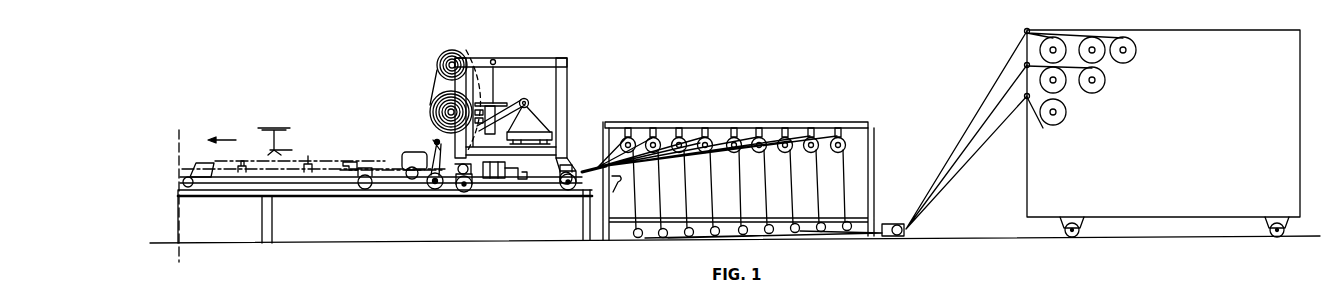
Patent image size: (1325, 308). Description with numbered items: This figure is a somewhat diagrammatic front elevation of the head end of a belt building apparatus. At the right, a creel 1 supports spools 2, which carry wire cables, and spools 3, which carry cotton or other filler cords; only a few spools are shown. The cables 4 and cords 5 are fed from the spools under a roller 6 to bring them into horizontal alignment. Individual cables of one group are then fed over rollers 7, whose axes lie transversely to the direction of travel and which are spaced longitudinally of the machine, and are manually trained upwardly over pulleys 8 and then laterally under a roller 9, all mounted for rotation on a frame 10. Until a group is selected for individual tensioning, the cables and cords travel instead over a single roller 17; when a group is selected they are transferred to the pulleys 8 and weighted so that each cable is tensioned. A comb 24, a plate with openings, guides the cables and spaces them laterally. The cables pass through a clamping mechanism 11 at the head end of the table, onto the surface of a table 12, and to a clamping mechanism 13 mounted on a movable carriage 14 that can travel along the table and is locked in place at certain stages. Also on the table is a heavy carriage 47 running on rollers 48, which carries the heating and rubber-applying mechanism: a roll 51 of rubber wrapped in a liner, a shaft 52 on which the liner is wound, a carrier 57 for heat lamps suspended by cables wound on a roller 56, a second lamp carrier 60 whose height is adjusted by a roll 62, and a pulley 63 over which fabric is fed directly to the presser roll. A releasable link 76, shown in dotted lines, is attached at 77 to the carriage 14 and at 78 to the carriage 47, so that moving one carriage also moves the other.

The creel 1 is at (1178, 30).
The spools 2 is at (1058, 42).
The spools 3 is at (1100, 80).
The cables 4 is at (636, 200).
The cords 5 is at (990, 108).
The roller 6 is at (897, 226).
The rollers 7 is at (662, 238).
The pulleys 8 is at (640, 135).
The roller 9 is at (574, 168).
The frame 10 is at (660, 124).
The clamping mechanism 11 is at (500, 179).
The table 12 is at (466, 178).
The clamping mechanism 13 is at (283, 151).
The movable carriage 14 is at (247, 162).
The roller 17 is at (618, 183).
The comb 24 is at (529, 180).
The carriage 47 is at (566, 63).
The rollers 48 is at (459, 188).
The roll 51 is at (445, 102).
The shaft 52 is at (448, 62).
The roller 56 is at (495, 59).
The carrier 57 is at (497, 102).
The carrier 60 is at (549, 136).
The roll 62 is at (526, 98).
The pulley 63 is at (436, 139).
The link 76 is at (374, 165).
The attachment point 77 is at (352, 159).
The attachment point 78 is at (422, 152).